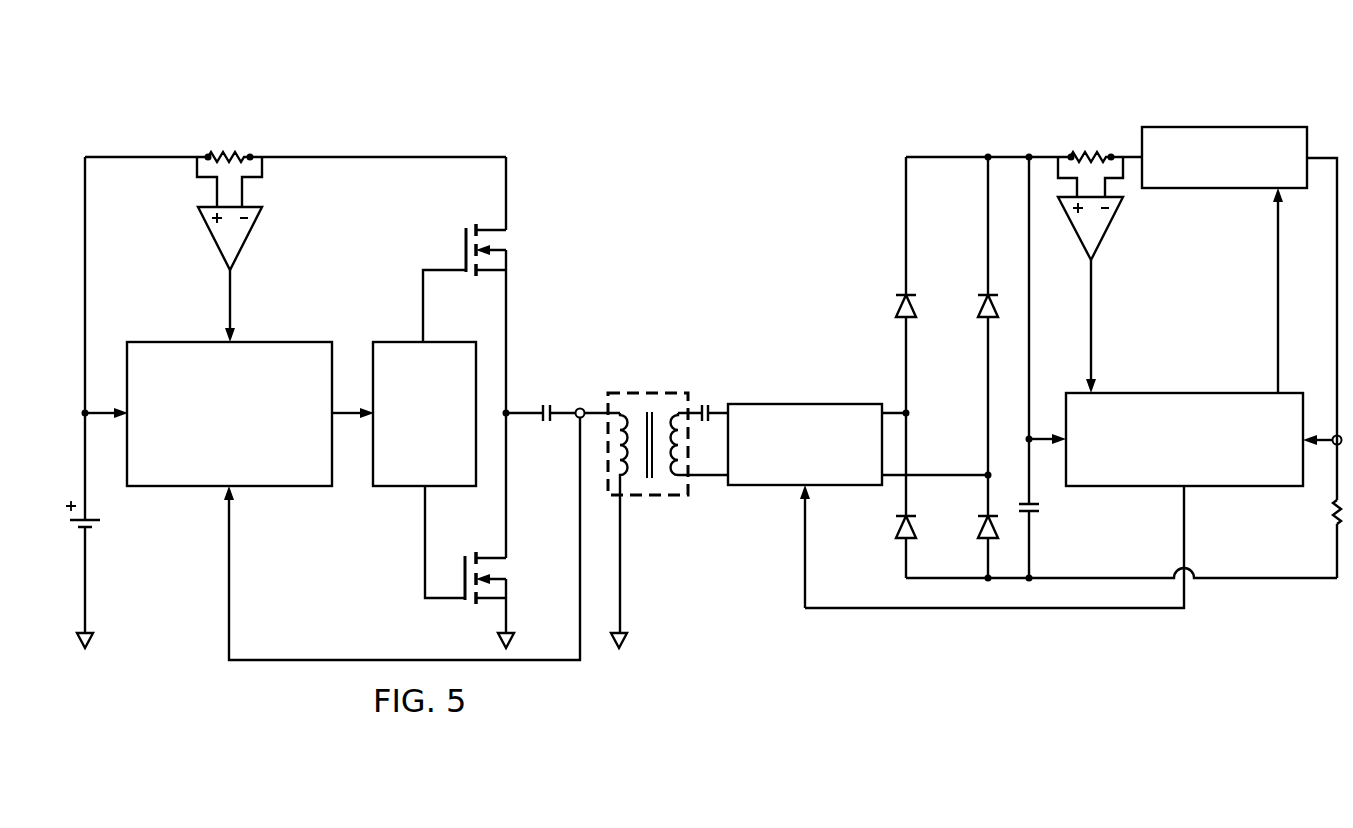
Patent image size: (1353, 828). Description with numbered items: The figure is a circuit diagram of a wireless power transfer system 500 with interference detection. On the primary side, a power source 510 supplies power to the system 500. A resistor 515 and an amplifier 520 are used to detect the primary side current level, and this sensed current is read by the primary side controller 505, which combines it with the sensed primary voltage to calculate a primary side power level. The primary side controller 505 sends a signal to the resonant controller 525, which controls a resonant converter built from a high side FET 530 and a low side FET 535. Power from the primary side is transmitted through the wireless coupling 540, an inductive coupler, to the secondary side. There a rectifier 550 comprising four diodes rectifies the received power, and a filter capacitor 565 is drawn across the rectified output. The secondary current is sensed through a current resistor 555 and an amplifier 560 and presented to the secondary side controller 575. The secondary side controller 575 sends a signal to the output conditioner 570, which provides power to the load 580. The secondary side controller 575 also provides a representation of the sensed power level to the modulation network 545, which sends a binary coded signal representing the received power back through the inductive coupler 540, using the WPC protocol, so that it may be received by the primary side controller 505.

The system 500 is at (557, 98).
The primary side controller 505 is at (157, 340).
The power source 510 is at (103, 527).
The resistor 515 is at (232, 152).
The amplifier 520 is at (216, 247).
The controller 525 is at (397, 341).
The high side FET 530 is at (463, 240).
The low side FET 535 is at (464, 572).
The wireless coupling 540 is at (637, 392).
The modulation network 545 is at (840, 489).
The rectifier 550 is at (938, 252).
The current resistor 555 is at (1092, 152).
The amplifier 560 is at (1110, 233).
The filter capacitor 565 is at (1042, 508).
The output conditioner 570 is at (1236, 126).
The secondary side controller 575 is at (1208, 490).
The load 580 is at (1330, 518).